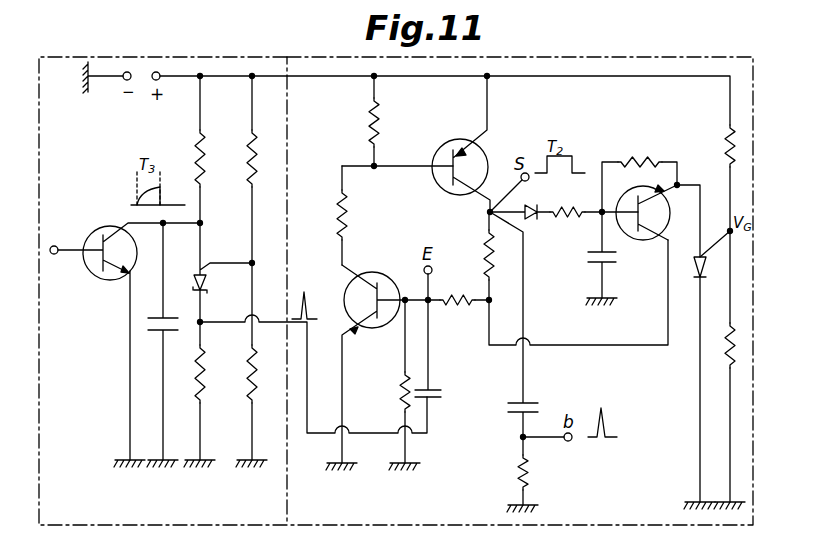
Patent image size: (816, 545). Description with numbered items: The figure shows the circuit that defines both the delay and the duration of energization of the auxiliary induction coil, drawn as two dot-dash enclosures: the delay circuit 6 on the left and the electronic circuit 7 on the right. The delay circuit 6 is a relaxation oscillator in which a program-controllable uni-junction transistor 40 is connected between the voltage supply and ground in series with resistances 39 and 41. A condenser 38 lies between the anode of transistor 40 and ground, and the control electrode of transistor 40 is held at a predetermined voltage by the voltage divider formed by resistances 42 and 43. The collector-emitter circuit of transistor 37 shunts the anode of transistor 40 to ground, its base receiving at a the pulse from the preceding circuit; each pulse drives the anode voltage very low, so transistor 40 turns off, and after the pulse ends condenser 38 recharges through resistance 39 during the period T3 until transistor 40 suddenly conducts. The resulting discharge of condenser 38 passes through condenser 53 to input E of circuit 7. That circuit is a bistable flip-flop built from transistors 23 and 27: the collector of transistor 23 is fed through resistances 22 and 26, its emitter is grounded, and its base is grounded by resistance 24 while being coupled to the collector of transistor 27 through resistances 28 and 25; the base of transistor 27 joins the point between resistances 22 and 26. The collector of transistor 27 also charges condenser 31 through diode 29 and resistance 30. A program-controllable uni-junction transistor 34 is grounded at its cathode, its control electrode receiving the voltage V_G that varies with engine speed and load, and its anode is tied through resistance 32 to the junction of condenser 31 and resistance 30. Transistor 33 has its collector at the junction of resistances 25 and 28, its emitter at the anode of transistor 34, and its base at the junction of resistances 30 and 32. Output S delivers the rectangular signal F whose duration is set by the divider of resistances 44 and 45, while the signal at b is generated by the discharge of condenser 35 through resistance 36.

The delay circuit 6 is at (82, 57).
The electronic circuit 7 is at (621, 60).
The resistance 22 is at (349, 222).
The transistor 23 is at (375, 328).
The resistance 24 is at (402, 392).
The resistance 25 is at (458, 295).
The resistance 26 is at (381, 125).
The transistor 27 is at (462, 135).
The resistance 28 is at (486, 246).
The diode 29 is at (532, 222).
The resistance 30 is at (557, 211).
The condenser 31 is at (590, 268).
The resistance 32 is at (639, 173).
The transistor 33 is at (645, 241).
The program-controllable uni-junction transistor 34 is at (697, 281).
The condenser 35 is at (520, 399).
The resistance 36 is at (521, 463).
The transistor 37 is at (102, 283).
The condenser 38 is at (159, 333).
The resistance 39 is at (197, 141).
The program-controllable uni-junction transistor 40 is at (207, 292).
The resistance 41 is at (205, 378).
The resistance 42 is at (249, 157).
The resistance 43 is at (248, 373).
The resistance 44 is at (725, 148).
The resistance 45 is at (728, 370).
The condenser 53 is at (440, 396).